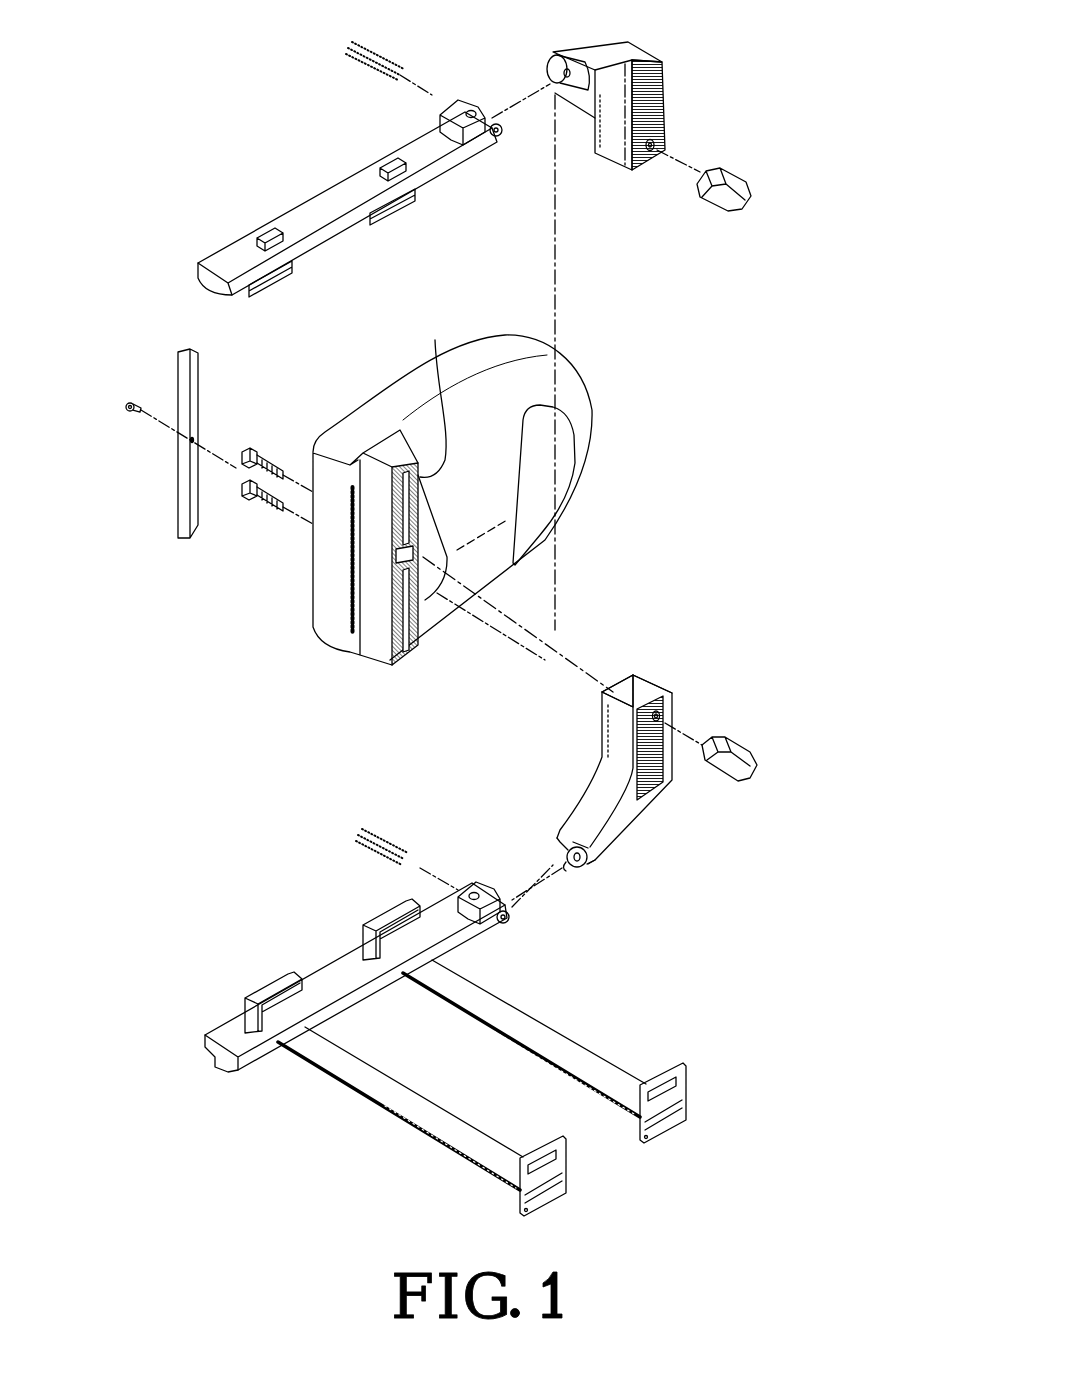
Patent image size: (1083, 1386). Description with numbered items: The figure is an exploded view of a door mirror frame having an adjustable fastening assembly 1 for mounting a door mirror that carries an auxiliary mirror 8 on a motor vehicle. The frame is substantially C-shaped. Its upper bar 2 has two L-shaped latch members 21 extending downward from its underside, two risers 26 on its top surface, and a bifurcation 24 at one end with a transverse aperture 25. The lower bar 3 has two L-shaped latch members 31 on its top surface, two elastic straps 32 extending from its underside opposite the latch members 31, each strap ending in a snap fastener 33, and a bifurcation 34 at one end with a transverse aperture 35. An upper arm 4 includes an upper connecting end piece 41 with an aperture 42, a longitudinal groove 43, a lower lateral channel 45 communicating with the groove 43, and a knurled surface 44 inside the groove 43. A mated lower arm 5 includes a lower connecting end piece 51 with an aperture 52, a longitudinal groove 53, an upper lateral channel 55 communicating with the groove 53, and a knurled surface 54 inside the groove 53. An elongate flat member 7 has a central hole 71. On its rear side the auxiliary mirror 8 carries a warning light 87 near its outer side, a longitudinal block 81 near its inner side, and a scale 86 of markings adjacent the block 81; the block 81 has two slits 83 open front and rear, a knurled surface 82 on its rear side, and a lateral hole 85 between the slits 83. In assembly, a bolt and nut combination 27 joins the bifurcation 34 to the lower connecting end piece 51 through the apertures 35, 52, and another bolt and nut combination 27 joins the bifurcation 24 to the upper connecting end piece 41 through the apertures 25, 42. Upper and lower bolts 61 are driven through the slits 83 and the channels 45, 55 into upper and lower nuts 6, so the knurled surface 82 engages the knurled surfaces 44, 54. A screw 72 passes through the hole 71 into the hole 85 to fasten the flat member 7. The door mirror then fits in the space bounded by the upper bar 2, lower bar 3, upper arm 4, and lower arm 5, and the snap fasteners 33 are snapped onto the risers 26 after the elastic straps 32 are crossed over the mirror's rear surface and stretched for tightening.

The adjustable fastening assembly 1 is at (210, 650).
The upper bar 2 is at (203, 262).
The L-shaped latch members 21 is at (390, 220).
The bifurcation 24 is at (481, 105).
The transverse aperture 25 is at (502, 137).
The risers 26 is at (383, 155).
The bolt and nut combination 27 is at (372, 55).
The lower bar 3 is at (213, 1040).
The L-shaped latch members 31 is at (393, 913).
The elastic straps 32 is at (462, 1005).
The snap fastener 33 is at (690, 1092).
The bifurcation 34 is at (488, 892).
The transverse aperture 35 is at (508, 927).
The upper arm 4 is at (633, 315).
The upper connecting end piece 41 is at (547, 70).
The aperture 42 is at (568, 69).
The longitudinal groove 43 is at (609, 155).
The knurled surface 44 is at (664, 90).
The lower lateral channel 45 is at (655, 144).
The lower arm 5 is at (637, 779).
The lower connecting end piece 51 is at (563, 870).
The aperture 52 is at (582, 866).
The longitudinal groove 53 is at (613, 690).
The knurled surface 54 is at (652, 797).
The upper lateral channel 55 is at (660, 716).
The nuts 6 is at (738, 210).
The bolts 61 is at (262, 452).
The elongate flat member 7 is at (180, 512).
The central hole 71 is at (190, 443).
The screw 72 is at (133, 402).
The auxiliary mirror 8 is at (449, 508).
The longitudinal block 81 is at (375, 480).
The knurled surface 82 is at (435, 345).
The slits 83 is at (415, 505).
The lateral hole 85 is at (395, 555).
The scale 86 is at (348, 586).
The warning light 87 is at (572, 468).